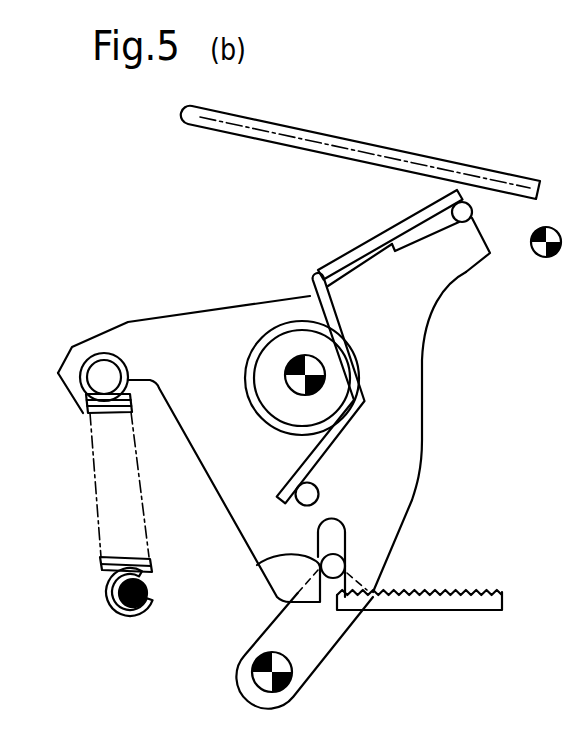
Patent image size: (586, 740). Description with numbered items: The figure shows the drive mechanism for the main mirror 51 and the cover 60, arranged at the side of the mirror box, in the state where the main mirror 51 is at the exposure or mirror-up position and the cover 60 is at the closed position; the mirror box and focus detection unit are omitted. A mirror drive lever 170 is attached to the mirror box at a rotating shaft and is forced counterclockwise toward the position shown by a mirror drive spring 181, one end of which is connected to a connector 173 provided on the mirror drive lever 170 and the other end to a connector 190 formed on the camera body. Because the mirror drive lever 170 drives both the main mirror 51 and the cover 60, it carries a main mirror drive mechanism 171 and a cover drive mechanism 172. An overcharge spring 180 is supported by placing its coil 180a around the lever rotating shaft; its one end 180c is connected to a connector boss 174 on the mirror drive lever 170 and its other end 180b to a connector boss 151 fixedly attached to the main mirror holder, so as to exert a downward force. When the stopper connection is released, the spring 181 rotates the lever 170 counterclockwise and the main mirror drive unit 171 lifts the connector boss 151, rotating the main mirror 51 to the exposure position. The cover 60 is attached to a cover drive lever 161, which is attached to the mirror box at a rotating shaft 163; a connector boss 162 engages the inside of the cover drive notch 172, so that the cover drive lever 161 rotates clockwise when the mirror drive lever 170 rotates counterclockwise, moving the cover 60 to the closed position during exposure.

The main mirror 51 is at (361, 153).
The connector boss 151 is at (462, 212).
The overcharge spring 180 is at (343, 231).
The coil 180a is at (270, 330).
The other end of the overcharge spring 180b is at (343, 262).
The one end of the overcharge spring 180c is at (289, 487).
The mirror drive lever 170 is at (403, 397).
The main mirror drive mechanism 171 is at (455, 260).
The cover drive mechanism 172 is at (347, 545).
The connector 173 is at (102, 372).
The connector boss 174 is at (307, 494).
The mirror drive spring 181 is at (115, 498).
The connector 190 is at (133, 613).
The cover 60 is at (455, 594).
The cover drive lever 161 is at (327, 632).
The connector boss 162 is at (282, 557).
The rotating shaft 163 is at (290, 680).